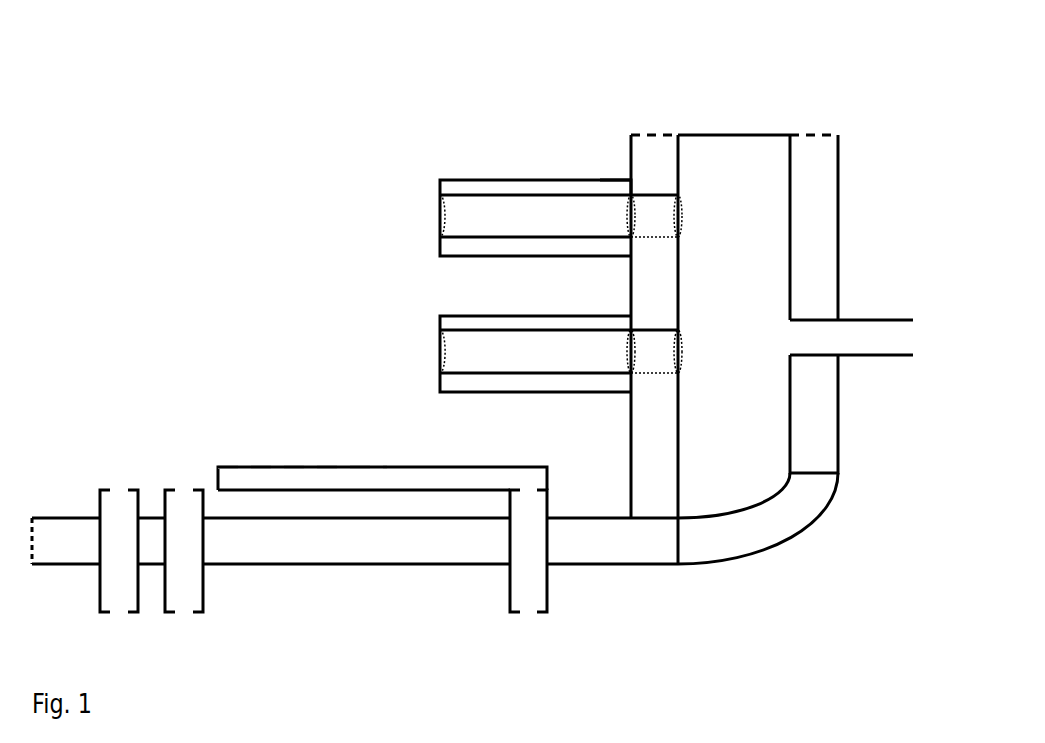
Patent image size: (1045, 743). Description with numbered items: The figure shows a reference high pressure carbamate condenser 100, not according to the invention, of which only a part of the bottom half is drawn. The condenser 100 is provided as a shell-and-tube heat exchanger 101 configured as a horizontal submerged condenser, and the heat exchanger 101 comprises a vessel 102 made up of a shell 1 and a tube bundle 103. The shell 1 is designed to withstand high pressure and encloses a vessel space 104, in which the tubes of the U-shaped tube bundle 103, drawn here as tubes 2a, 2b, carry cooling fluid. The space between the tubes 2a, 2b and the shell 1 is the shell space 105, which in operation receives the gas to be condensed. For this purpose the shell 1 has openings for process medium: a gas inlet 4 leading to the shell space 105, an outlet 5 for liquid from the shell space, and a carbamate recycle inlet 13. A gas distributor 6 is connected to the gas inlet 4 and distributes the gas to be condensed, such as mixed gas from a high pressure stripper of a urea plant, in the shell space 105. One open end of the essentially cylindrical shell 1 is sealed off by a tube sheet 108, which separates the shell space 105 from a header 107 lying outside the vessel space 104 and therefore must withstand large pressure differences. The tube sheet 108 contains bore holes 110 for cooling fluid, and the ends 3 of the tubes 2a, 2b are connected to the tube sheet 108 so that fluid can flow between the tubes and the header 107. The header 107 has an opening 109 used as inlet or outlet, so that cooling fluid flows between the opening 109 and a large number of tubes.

The shell 1 is at (303, 558).
The tube 2a is at (493, 248).
The tube 2b is at (523, 387).
The tube end 3 is at (622, 188).
The gas inlet 4 is at (548, 585).
The liquid outlet 5 is at (100, 604).
The gas distributor 6 is at (452, 480).
The carbamate recycle inlet 13 is at (205, 582).
The condenser 100 is at (472, 351).
The shell-and-tube heat exchanger 101 is at (247, 137).
The vessel 102 is at (472, 351).
The tube bundle 103 is at (447, 258).
The vessel space 104 is at (315, 378).
The shell space 105 is at (505, 288).
The header 107 is at (720, 153).
The tube sheet 108 is at (648, 493).
The opening 109 is at (860, 358).
The bore holes 110 is at (682, 213).